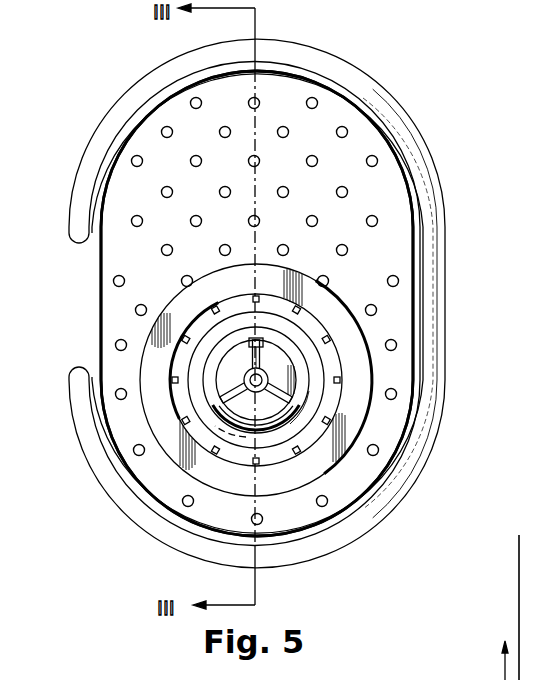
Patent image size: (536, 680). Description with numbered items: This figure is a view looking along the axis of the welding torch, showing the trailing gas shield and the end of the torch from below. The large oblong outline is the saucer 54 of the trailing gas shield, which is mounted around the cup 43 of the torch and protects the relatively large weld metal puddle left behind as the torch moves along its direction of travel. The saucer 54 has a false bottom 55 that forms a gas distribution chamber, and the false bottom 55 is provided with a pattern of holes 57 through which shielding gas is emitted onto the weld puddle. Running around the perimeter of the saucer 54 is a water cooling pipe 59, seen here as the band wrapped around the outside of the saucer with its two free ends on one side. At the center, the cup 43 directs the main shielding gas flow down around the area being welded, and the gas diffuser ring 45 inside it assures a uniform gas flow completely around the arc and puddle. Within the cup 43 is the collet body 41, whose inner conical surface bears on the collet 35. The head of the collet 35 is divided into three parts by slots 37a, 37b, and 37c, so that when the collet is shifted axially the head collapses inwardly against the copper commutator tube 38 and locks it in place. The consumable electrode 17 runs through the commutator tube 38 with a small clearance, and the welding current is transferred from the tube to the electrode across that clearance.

The consumable electrode 17 is at (240, 350).
The collet 35 is at (200, 364).
The slot 37a is at (250, 355).
The slot 37b is at (225, 394).
The slot 37c is at (298, 450).
The copper commutator tube 38 is at (278, 335).
The collet body 41 is at (153, 327).
The cup 43 is at (362, 377).
The gas diffuser ring 45 is at (336, 406).
The saucer 54 is at (406, 183).
The false bottom 55 is at (328, 115).
The holes 57 is at (192, 101).
The water cooling pipe 59 is at (88, 164).